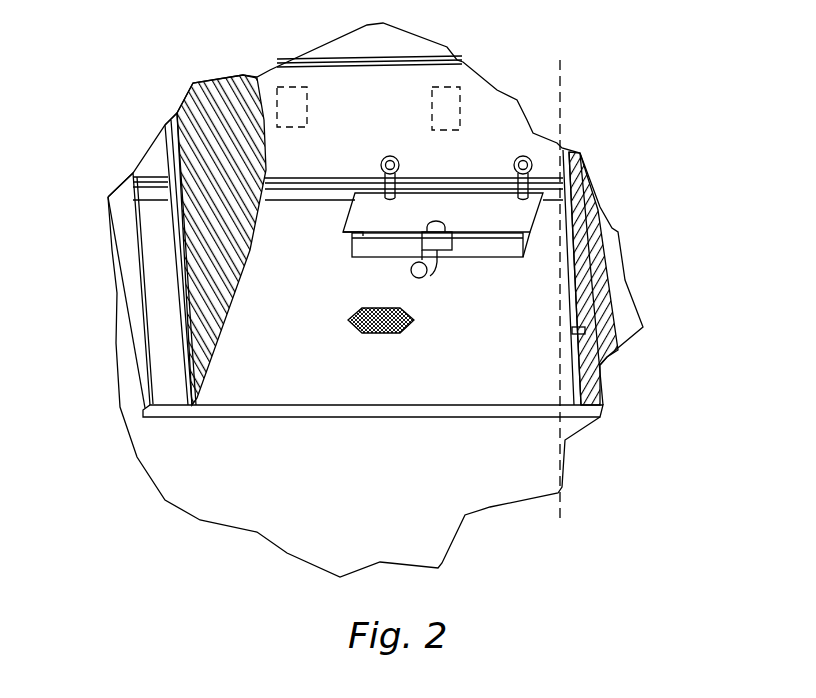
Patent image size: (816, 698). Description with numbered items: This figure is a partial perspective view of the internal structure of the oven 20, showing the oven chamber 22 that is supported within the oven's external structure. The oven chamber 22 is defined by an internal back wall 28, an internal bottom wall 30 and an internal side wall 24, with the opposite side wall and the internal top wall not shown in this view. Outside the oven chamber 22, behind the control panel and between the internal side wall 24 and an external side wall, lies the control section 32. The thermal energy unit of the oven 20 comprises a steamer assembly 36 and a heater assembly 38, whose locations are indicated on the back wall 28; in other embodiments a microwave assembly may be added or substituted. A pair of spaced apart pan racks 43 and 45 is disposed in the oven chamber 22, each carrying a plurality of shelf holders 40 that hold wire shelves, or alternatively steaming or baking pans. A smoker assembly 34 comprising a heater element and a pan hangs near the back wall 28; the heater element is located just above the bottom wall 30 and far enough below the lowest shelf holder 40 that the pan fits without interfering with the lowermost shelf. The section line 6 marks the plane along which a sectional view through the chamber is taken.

The section line 6- 6 is at (568, 100).
The oven 20 is at (607, 168).
The oven chamber 22 is at (291, 355).
The internal side wall 24 is at (139, 306).
The internal back wall 28 is at (362, 120).
The internal bottom wall 30 is at (499, 390).
The control section 32 is at (146, 219).
The smoker assembly 34 is at (481, 266).
The steamer assembly 36 is at (293, 97).
The heater assembly 38 is at (448, 97).
The shelf holders 40 is at (233, 270).
The pan rack 43 is at (165, 125).
The pan rack 45 is at (583, 387).